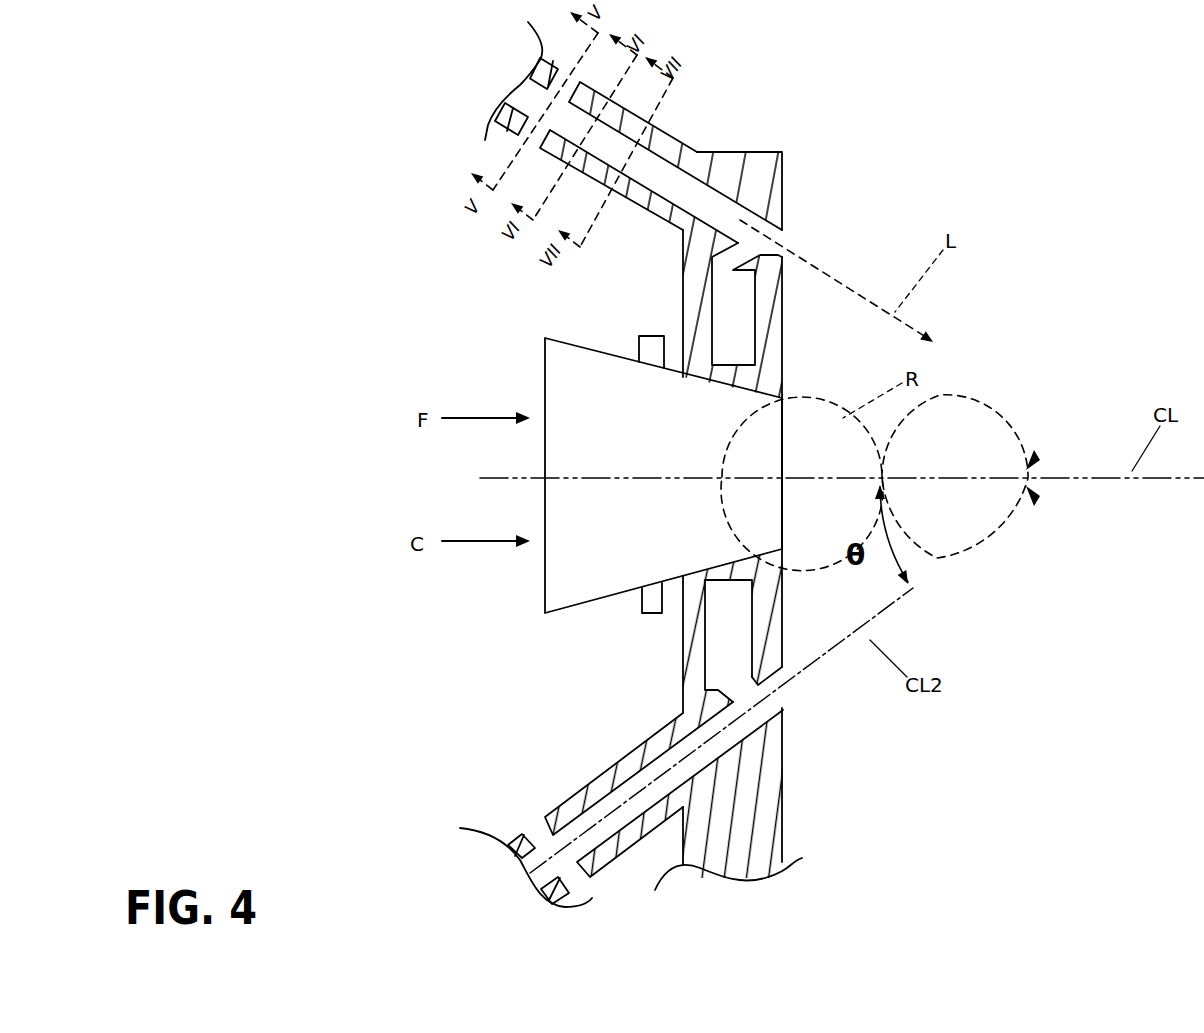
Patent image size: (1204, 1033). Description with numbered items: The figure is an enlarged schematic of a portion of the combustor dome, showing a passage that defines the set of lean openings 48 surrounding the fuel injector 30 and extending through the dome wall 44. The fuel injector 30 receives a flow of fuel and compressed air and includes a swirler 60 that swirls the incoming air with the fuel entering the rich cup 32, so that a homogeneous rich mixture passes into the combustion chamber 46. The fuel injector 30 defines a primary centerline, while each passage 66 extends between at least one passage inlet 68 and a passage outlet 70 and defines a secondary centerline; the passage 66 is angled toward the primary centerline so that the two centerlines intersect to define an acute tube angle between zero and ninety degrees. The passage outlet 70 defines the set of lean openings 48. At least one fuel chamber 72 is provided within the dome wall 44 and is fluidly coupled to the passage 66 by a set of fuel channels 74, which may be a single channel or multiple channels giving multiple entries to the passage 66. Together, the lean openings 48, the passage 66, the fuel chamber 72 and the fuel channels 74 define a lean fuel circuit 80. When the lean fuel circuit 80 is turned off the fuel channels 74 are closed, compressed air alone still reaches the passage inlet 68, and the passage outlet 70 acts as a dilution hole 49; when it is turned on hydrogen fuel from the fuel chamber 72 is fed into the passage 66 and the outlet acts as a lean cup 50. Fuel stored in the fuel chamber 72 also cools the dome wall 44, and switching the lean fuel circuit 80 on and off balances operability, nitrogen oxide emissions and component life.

The fuel injector 30 is at (615, 598).
The rich cup 32 is at (680, 438).
The dome wall 44 is at (782, 800).
The combustion chamber 46 is at (1103, 456).
The set of lean openings 48 is at (747, 168).
The dilution hole 49 is at (747, 168).
The lean cup 50 is at (788, 231).
The swirler 60 is at (650, 615).
The passage 66 is at (615, 805).
The passage inlet 68 is at (536, 828).
The passage outlet 70 is at (782, 703).
The fuel chamber 72 is at (742, 652).
The set of fuel channels 74 is at (762, 674).
The lean fuel circuit 80 is at (652, 268).